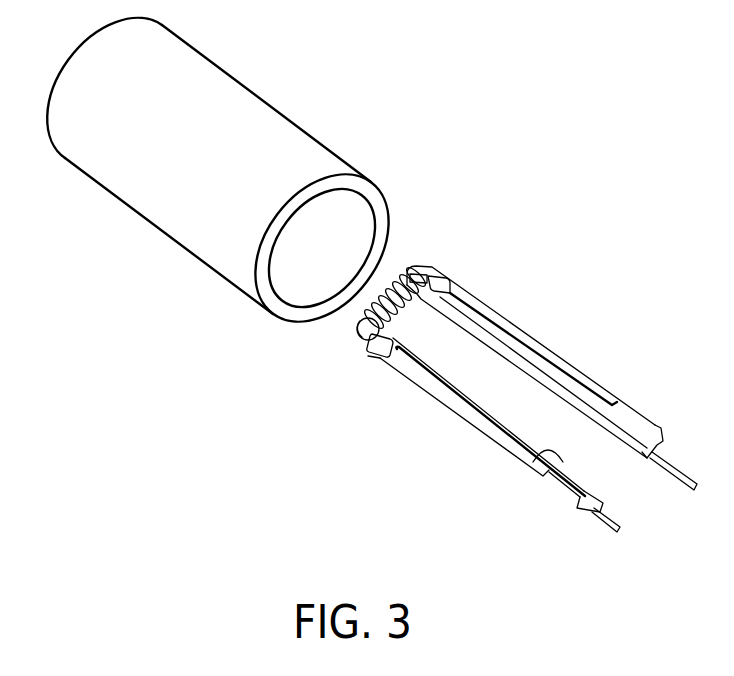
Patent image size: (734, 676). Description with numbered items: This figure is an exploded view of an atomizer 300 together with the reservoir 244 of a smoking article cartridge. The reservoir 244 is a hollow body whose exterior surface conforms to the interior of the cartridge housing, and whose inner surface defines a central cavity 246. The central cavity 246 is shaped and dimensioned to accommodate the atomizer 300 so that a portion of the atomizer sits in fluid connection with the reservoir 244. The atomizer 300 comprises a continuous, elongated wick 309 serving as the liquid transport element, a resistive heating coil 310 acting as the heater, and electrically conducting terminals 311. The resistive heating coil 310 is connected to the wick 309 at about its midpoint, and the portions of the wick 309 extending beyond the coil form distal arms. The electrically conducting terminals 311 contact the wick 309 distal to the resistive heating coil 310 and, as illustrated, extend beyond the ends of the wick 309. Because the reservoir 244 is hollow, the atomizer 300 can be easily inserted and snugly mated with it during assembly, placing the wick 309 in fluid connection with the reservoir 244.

The reservoir 244 is at (130, 177).
The central cavity 246 is at (320, 263).
The atomizer 300 is at (521, 357).
The wick 309 is at (423, 386).
The resistive heating coil 310 is at (398, 278).
The electrically conducting terminals 311 is at (575, 473).